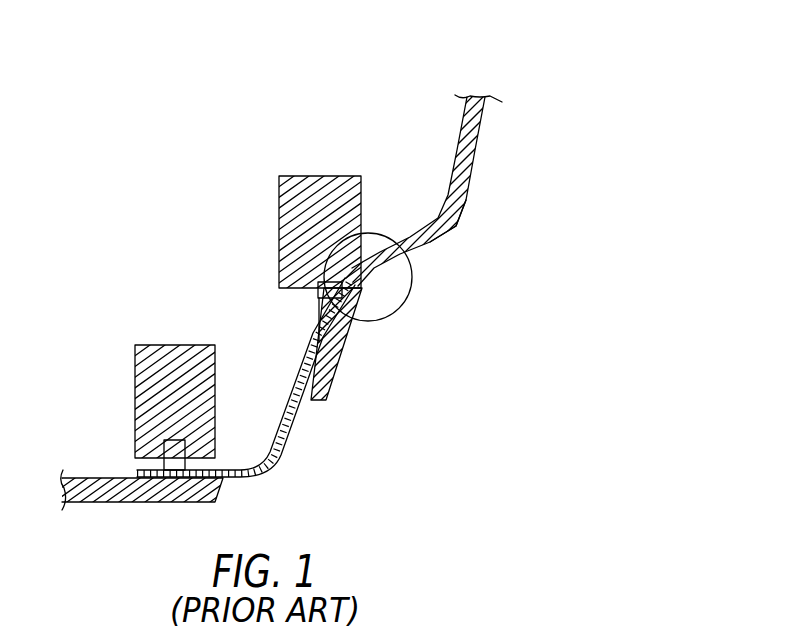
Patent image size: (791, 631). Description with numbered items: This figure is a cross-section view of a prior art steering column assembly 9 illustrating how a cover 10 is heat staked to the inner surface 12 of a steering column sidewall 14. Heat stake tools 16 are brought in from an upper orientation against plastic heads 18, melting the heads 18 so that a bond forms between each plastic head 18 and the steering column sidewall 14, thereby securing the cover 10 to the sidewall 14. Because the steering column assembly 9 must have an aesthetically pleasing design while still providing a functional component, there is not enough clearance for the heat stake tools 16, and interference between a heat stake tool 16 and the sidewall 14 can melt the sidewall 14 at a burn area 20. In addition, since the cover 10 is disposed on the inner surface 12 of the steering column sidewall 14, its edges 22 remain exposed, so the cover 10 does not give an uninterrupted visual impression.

The steering column assembly 9 is at (560, 72).
The cover 10 is at (258, 464).
The inner surface 12 is at (462, 118).
The steering column sidewall 14 is at (480, 157).
The heat stake tool 16 is at (279, 192).
The plastic head 18 is at (316, 298).
The burn area 20 is at (400, 308).
The edges 22 is at (222, 486).